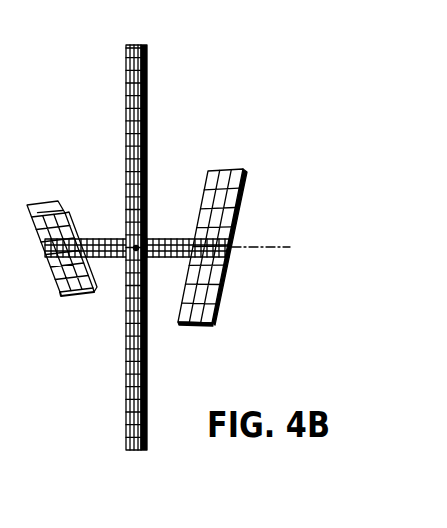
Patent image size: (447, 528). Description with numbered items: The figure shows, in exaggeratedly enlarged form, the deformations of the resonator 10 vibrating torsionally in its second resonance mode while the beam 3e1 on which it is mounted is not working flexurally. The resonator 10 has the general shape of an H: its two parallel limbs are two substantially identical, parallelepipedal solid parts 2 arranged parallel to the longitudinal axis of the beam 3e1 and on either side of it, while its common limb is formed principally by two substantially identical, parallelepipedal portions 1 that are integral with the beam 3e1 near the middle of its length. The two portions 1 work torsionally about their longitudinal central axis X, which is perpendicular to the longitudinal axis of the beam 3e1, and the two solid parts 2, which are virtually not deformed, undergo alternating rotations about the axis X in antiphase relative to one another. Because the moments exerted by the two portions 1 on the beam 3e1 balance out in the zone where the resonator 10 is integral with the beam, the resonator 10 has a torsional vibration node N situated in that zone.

The resonator 10 is at (189, 112).
The beam 3e1 is at (128, 98).
The parallelepipedal portions 1 is at (105, 237).
The parallelepipedal solid parts 2 is at (68, 282).
The torsional vibration node N is at (134, 250).
The longitudinal central axis X is at (272, 245).